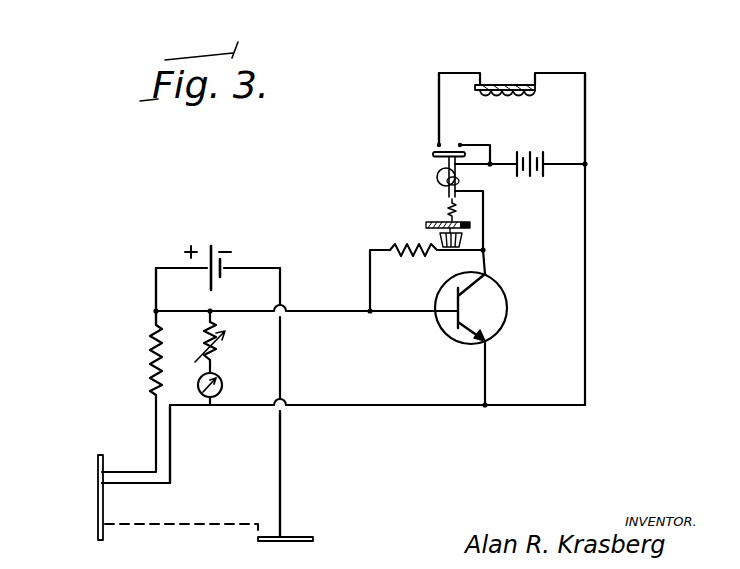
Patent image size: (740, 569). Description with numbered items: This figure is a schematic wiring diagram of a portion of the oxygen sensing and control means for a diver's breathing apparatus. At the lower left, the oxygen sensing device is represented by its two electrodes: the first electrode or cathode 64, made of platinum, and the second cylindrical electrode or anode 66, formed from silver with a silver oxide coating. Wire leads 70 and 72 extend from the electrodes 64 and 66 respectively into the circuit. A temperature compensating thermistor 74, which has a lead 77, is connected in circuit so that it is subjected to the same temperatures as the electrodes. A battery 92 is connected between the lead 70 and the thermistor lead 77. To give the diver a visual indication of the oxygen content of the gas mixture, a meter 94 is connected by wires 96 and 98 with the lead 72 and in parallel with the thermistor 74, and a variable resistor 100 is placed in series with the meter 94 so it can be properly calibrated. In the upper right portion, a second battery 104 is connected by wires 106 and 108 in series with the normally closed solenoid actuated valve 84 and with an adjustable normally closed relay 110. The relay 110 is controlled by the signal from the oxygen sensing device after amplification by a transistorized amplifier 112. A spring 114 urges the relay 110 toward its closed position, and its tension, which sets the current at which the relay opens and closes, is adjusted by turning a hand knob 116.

The first electrode or cathode 64 is at (296, 541).
The second cylindrical electrode or anode 66 is at (97, 502).
The wire lead 70 is at (283, 488).
The wire lead 72 is at (171, 468).
The temperature compensating thermistor 74 is at (150, 380).
The lead 77 is at (155, 323).
The solenoid actuated valve 84 is at (516, 67).
The battery 92 is at (247, 240).
The meter 94 is at (268, 391).
The wire 96 is at (176, 308).
The wire 98 is at (191, 408).
The variable resistor 100 is at (226, 347).
The battery 104 is at (545, 150).
The wire 106 is at (438, 112).
The wire 108 is at (586, 96).
The adjustable normally closed relay 110 is at (440, 172).
The transistorized amplifier 112 is at (437, 346).
The spring 114 is at (447, 209).
The hand knob 116 is at (462, 241).